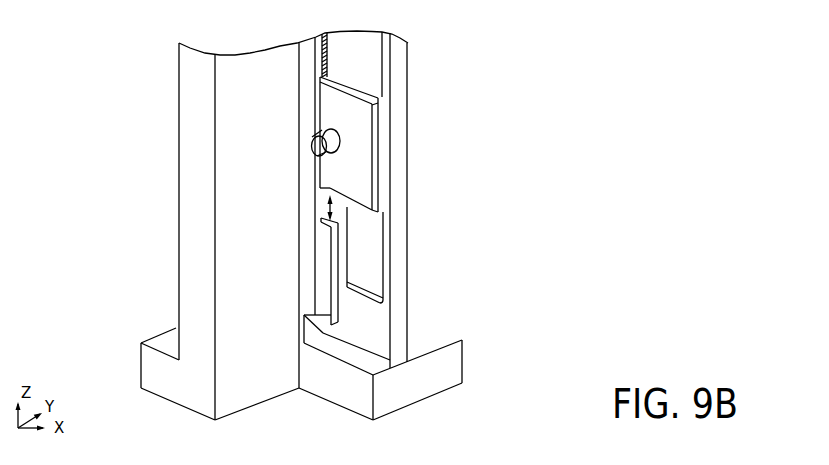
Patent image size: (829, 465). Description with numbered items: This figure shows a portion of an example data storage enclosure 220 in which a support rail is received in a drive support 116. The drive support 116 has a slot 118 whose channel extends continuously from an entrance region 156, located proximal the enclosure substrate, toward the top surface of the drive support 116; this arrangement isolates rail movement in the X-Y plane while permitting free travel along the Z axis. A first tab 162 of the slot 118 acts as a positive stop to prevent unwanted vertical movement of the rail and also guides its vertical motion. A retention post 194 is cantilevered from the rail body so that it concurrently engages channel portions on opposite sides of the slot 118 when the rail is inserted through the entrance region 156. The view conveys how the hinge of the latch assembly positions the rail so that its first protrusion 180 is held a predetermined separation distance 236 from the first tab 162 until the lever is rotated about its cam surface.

The data storage enclosure 220 is at (170, 40).
The first protrusion 180 is at (316, 107).
The predetermined separation distance 236 is at (328, 206).
The first tab 162 is at (309, 284).
The retention post 194 is at (346, 291).
The entrance region 156 is at (317, 344).
The slot 118 is at (364, 337).
The drive support 116 is at (452, 392).